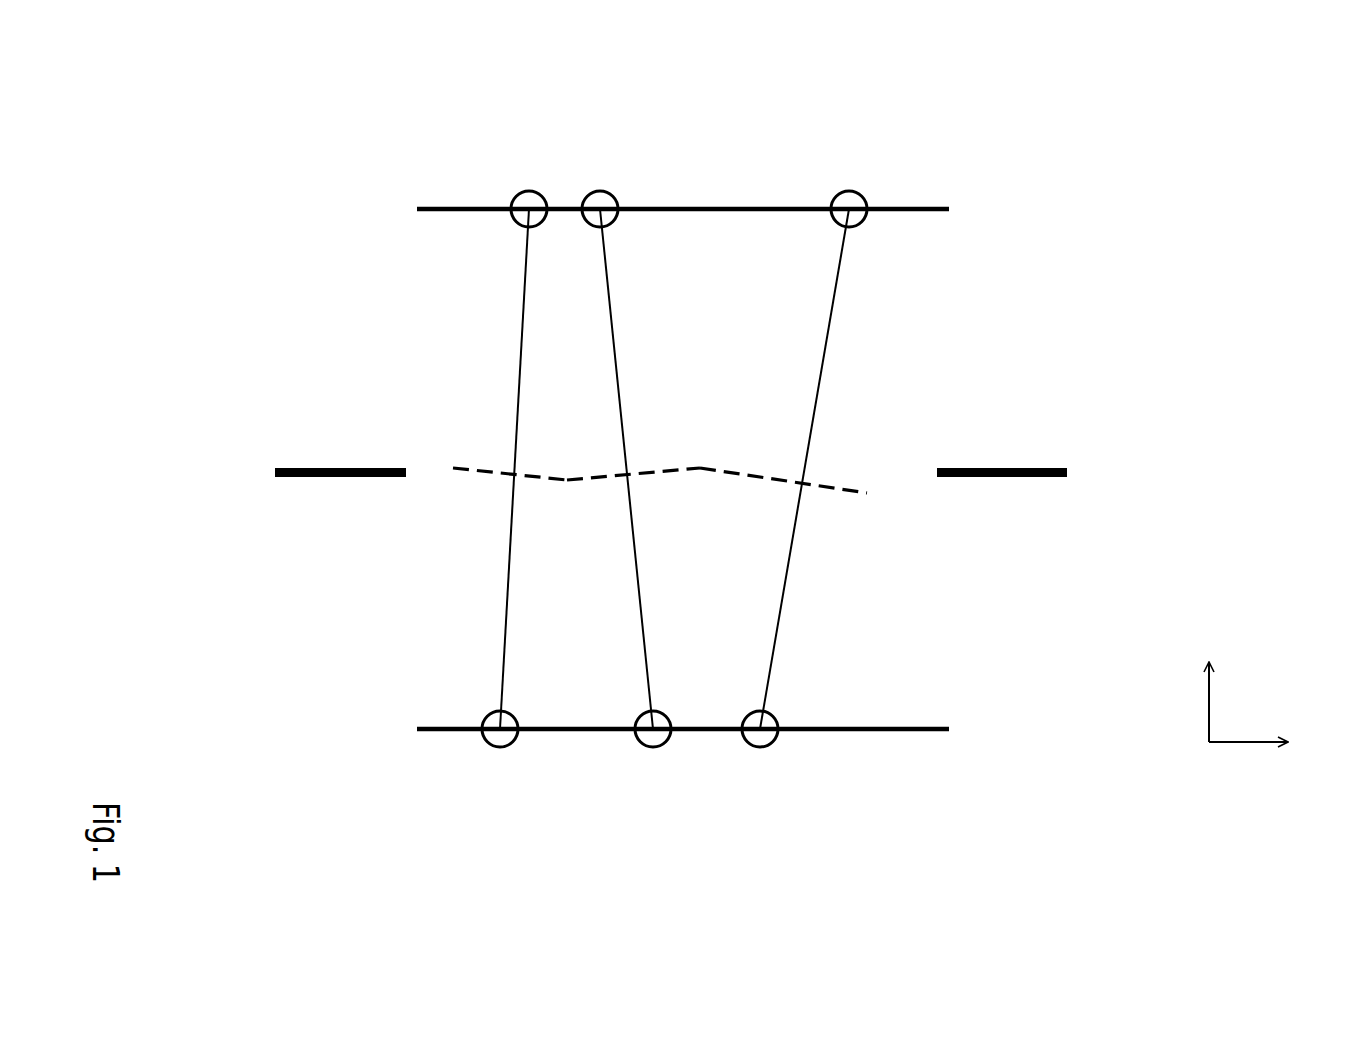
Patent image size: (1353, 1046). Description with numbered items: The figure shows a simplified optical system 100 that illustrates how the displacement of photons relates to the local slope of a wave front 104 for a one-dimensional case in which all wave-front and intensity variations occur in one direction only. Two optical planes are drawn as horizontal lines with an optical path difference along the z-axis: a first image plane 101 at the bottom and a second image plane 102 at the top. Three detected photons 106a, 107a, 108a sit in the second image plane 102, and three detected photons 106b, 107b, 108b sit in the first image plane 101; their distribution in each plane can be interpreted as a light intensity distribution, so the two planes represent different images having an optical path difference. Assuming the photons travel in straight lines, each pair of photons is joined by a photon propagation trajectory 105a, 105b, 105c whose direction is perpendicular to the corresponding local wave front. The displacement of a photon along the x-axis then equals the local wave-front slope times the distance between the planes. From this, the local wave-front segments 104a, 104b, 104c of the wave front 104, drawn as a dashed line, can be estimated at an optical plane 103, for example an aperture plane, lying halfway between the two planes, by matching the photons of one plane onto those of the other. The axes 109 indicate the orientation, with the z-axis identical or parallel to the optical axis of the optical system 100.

The optical system 100 is at (272, 68).
The first image plane 101 is at (406, 728).
The second image plane 102 is at (406, 208).
The optical plane 103 is at (267, 469).
The wave front 104 is at (663, 481).
The first local wave-front segment 104a is at (490, 482).
The second local wave-front segment 104b is at (608, 485).
The third local wave-front segment 104c is at (750, 482).
The photon propagation trajectory 105a is at (518, 368).
The photon propagation trajectory 105b is at (618, 350).
The photon propagation trajectory 105c is at (832, 328).
The photon 106a is at (527, 190).
The photon 106b is at (500, 749).
The photon 107a is at (601, 190).
The photon 107b is at (653, 749).
The photon 108a is at (849, 190).
The photon 108b is at (762, 749).
The orientation of the optical system 109 is at (1207, 717).